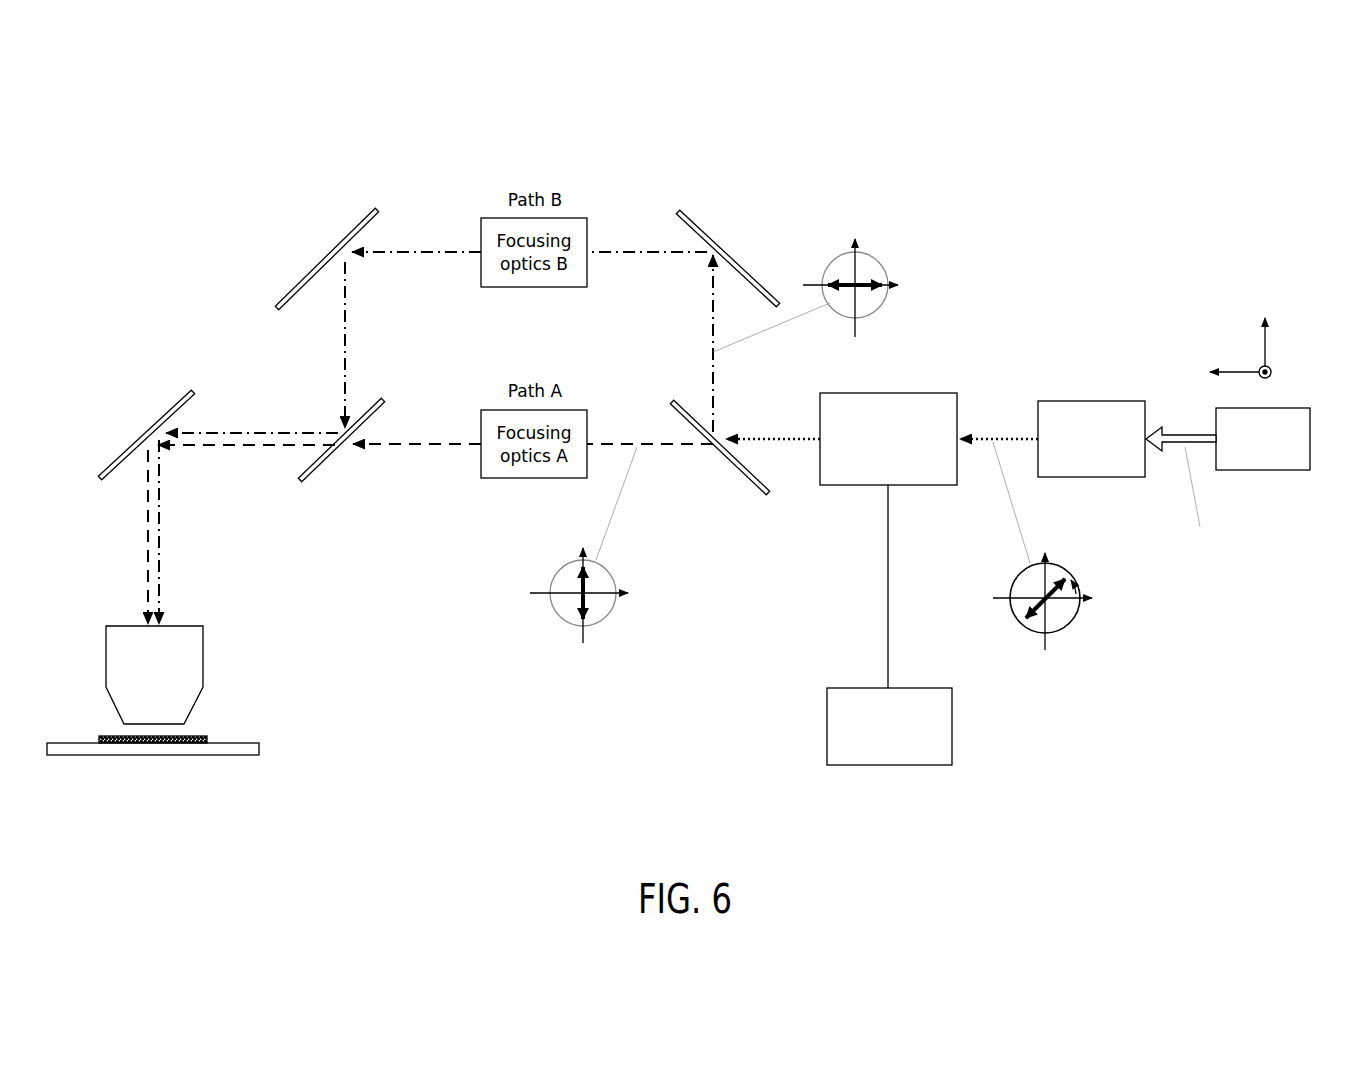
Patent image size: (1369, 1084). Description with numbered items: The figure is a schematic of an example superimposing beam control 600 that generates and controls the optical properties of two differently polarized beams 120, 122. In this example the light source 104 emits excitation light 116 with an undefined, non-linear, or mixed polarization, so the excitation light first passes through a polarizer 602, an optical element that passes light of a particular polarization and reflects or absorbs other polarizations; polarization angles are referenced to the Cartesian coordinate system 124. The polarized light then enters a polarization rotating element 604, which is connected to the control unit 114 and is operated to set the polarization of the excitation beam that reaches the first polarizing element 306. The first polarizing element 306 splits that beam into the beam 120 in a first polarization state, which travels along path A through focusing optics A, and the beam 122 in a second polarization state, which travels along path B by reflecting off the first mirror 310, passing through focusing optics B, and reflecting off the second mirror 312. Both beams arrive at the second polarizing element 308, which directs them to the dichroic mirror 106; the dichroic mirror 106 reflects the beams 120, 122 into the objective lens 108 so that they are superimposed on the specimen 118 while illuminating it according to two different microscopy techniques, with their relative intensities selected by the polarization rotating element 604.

The superimposing beam control 600 is at (1077, 177).
The light source 104 is at (1275, 460).
The dichroic mirror 106 is at (168, 407).
The objective lens 108 is at (195, 647).
The control unit 114 is at (887, 757).
The excitation light 116 is at (1165, 445).
The specimen 118 is at (227, 723).
The beam 120 is at (667, 445).
The beam 122 is at (713, 388).
The Cartesian coordinate system 124 is at (1283, 334).
The first polarizing element 306 is at (770, 495).
The second polarizing element 308 is at (320, 470).
The first mirror 310 is at (755, 270).
The second mirror 312 is at (303, 272).
The polarizer 602 is at (1098, 400).
The polarization rotating element 604 is at (932, 402).